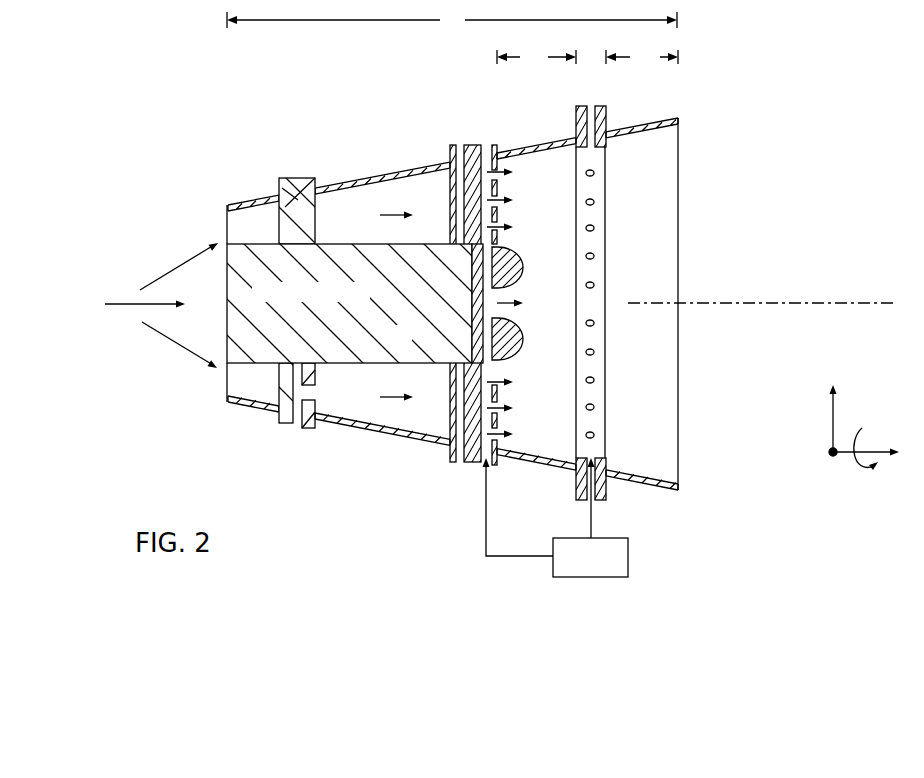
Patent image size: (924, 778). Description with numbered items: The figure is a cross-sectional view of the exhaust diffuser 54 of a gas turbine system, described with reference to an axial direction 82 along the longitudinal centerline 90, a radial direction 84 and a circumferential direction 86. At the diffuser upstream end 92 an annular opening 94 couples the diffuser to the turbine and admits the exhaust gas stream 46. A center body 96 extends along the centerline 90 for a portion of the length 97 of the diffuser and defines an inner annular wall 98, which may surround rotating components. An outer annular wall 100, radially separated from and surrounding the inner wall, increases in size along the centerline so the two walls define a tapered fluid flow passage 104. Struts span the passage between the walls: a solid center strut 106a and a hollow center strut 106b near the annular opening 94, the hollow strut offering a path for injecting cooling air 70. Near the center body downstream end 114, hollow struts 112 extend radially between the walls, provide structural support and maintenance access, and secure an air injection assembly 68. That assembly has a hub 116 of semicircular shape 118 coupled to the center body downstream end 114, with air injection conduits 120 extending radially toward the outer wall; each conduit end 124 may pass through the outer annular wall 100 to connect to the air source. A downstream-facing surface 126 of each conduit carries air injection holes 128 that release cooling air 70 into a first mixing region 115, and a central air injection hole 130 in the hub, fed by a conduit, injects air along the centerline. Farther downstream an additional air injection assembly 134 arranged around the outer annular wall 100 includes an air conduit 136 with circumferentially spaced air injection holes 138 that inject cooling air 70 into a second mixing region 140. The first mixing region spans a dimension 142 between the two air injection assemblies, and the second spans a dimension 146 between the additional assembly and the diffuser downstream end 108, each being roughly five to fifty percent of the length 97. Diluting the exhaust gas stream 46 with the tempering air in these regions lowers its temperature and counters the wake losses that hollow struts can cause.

The exhaust gas stream 46 is at (178, 266).
The exhaust diffuser 54 is at (214, 126).
The air injection assembly 68 is at (541, 254).
The cooling air 70 is at (504, 180).
The axial direction 82 is at (880, 452).
The radial direction 84 is at (833, 428).
The circumferential direction 86 is at (850, 477).
The longitudinal centerline 90 is at (832, 303).
The diffuser upstream end 92 is at (213, 214).
The annular opening 94 is at (226, 380).
The center body 96 is at (409, 341).
The length of the exhaust diffuser 97 is at (452, 20).
The inner annular wall 98 is at (352, 244).
The outer annular wall 100 is at (385, 177).
The fluid flow passage 104 is at (352, 412).
The solid center strut 106a is at (296, 192).
The hollow center strut 106b is at (290, 428).
The downstream end 108 is at (743, 183).
The hollow struts 112 is at (452, 146).
The center body downstream end 114 is at (470, 302).
The first mixing region 115 is at (543, 474).
The hub 116 is at (514, 360).
The semicircular shape 118 is at (523, 268).
The air injection conduits 120 is at (492, 150).
The conduit end 124 is at (494, 468).
The downstream-facing surface 126 is at (500, 150).
The air injection holes 128 is at (505, 443).
The central air injection hole 130 is at (518, 290).
The additional air injection assembly 134 is at (620, 127).
The air conduit 136 is at (600, 480).
The air injection holes 138 is at (601, 203).
The second mixing region 140 is at (672, 478).
The dimension 142 is at (536, 57).
The dimension 146 is at (642, 57).